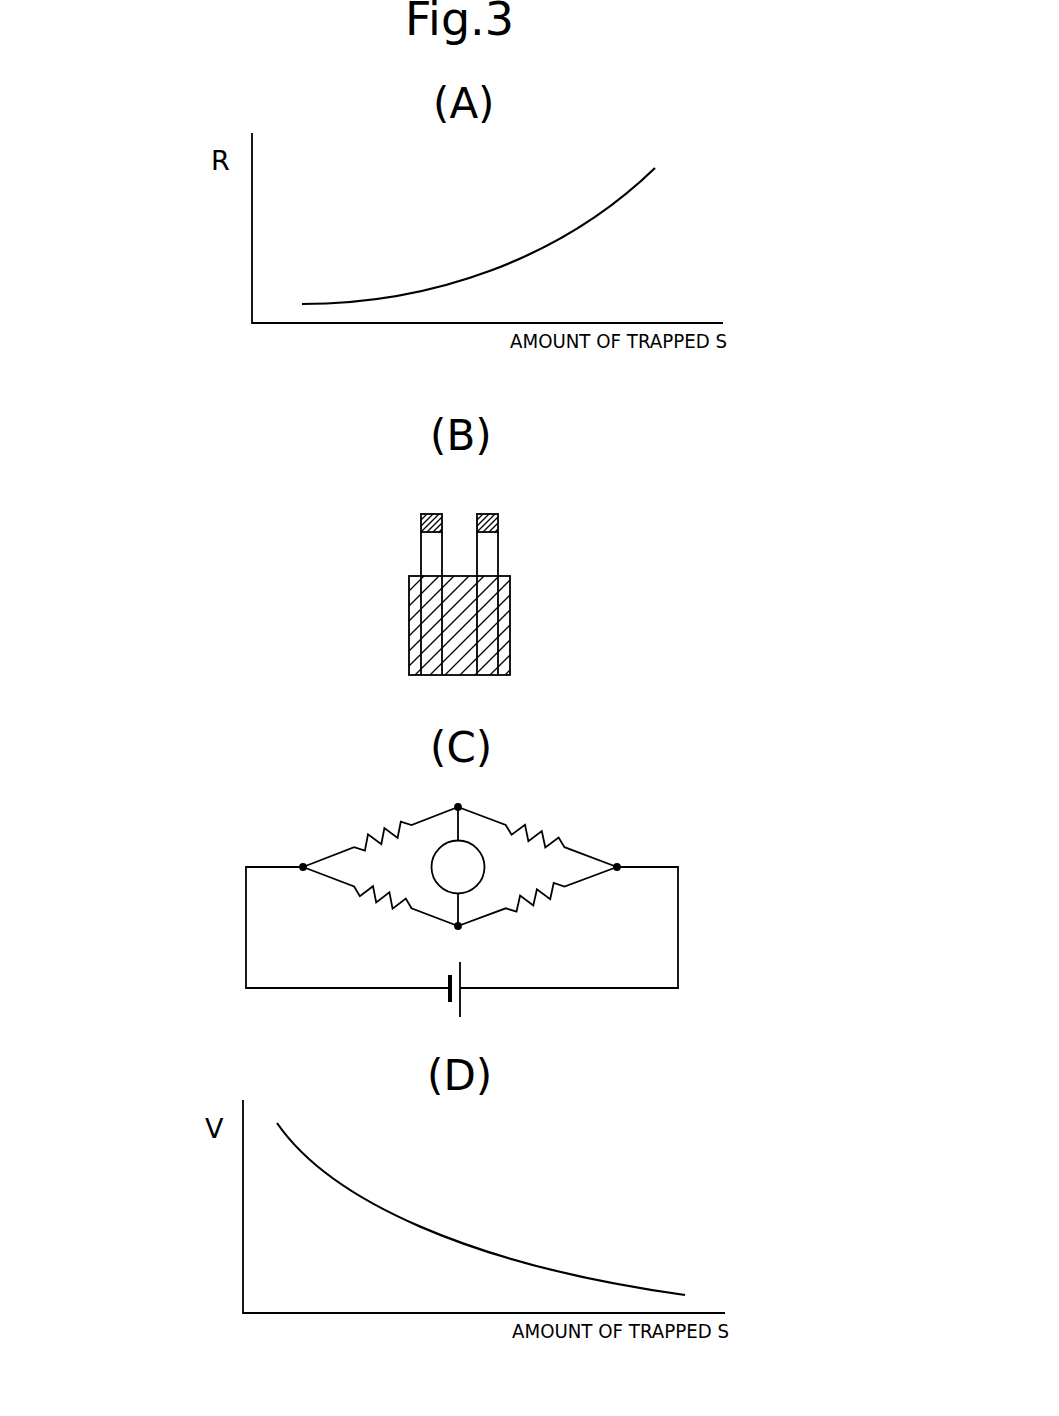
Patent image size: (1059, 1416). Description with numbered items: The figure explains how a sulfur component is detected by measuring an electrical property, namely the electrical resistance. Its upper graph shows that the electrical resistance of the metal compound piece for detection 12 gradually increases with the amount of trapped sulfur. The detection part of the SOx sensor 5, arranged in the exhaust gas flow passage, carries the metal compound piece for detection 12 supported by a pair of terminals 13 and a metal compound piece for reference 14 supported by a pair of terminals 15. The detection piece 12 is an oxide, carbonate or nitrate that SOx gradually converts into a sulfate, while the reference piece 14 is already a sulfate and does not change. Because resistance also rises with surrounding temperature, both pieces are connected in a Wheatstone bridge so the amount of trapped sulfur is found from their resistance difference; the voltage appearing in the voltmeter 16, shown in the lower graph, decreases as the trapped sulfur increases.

The SOx sensor 5 is at (406, 653).
The metal compound piece for detection 12 is at (430, 513).
The pair of terminals 13 is at (440, 550).
The metal compound piece for reference 14 is at (487, 513).
The pair of terminals 15 is at (480, 550).
The voltmeter 16 is at (443, 845).